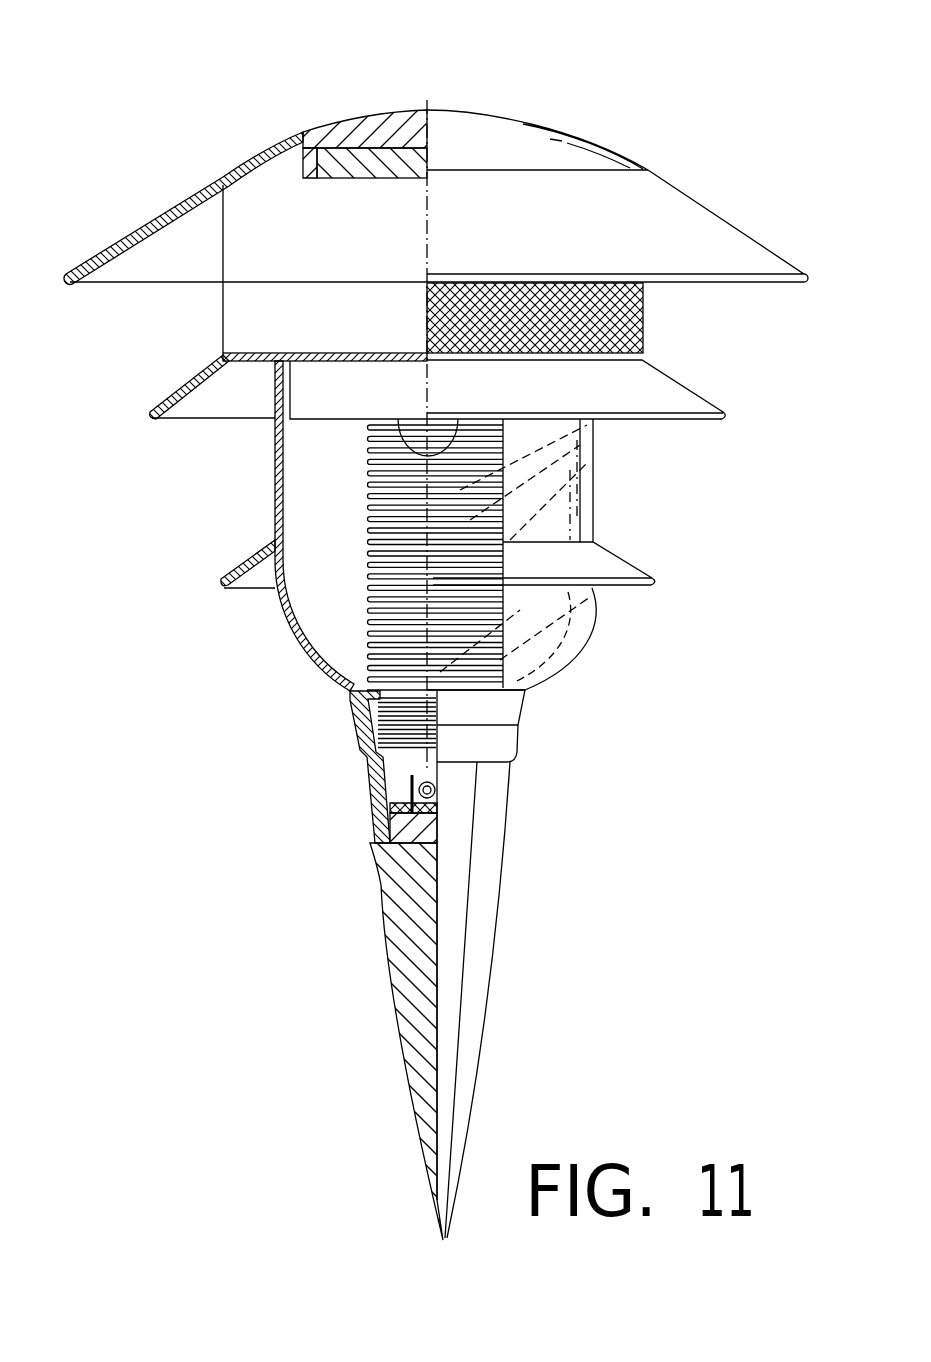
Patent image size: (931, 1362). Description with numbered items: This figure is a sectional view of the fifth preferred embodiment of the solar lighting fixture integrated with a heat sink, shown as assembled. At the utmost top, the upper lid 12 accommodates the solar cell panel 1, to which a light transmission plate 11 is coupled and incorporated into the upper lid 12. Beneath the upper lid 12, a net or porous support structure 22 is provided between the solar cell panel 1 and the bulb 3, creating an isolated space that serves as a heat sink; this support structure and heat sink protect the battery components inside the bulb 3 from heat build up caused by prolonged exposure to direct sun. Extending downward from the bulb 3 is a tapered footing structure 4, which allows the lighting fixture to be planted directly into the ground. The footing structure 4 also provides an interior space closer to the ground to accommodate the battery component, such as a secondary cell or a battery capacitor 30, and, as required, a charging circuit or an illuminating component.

The solar cell panel 1 is at (393, 167).
The light transmission plate 11 is at (377, 127).
The upper lid 12 is at (190, 190).
The net or porous support structure 22 is at (643, 327).
The bulb 3 is at (310, 643).
The battery capacitor 30 is at (387, 817).
The tapered footing structure 4 is at (400, 940).